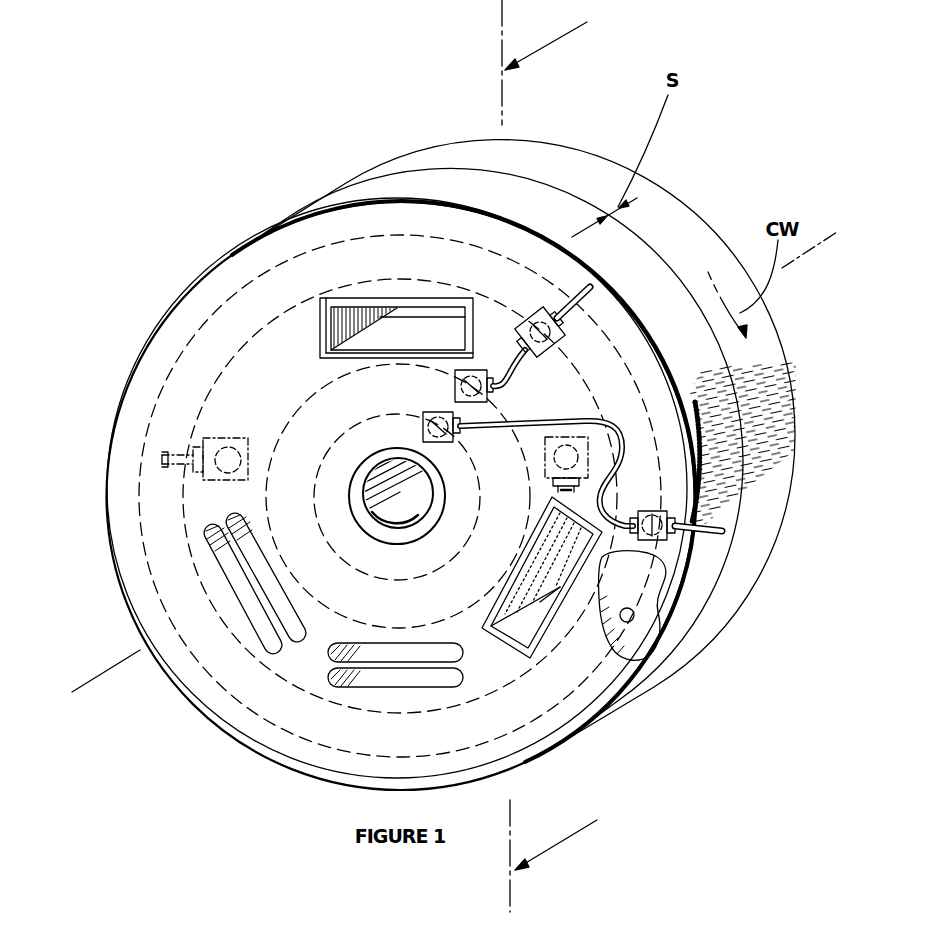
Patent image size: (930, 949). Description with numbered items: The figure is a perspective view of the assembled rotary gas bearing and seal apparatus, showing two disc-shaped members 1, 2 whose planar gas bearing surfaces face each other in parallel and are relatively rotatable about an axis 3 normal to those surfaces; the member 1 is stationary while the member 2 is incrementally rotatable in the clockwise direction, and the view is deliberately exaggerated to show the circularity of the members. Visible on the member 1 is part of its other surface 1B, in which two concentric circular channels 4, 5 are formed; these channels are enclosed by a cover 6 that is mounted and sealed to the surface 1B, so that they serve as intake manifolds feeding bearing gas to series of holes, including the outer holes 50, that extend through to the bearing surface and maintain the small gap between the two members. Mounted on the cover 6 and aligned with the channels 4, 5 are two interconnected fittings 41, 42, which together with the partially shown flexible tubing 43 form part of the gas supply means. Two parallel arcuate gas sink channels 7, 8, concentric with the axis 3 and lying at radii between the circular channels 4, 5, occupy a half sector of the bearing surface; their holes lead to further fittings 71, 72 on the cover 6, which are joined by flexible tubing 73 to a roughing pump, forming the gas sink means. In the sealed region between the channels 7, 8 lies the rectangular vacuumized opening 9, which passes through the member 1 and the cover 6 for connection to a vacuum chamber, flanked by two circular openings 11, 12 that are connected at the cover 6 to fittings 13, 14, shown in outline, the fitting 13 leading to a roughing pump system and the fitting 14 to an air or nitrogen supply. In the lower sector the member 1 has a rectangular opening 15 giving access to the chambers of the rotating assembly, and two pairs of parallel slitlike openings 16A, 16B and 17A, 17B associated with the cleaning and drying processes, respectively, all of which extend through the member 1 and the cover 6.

The member 1 is at (378, 193).
The surface of member 1 1B is at (609, 592).
The member 2 is at (452, 150).
The axis 3 is at (118, 668).
The circular channel 4 is at (377, 578).
The circular channel 5 is at (640, 583).
The cover 6 is at (190, 308).
The arcuate channel 7 is at (310, 397).
The arcuate channel 8 is at (275, 316).
The vacuumized opening 9 is at (342, 315).
The circular opening 11 is at (214, 474).
The circular opening 12 is at (563, 460).
The fitting 13 is at (208, 452).
The fitting 14 is at (560, 430).
The opening 15 is at (533, 578).
The slitlike opening 16A is at (417, 652).
The slitlike opening 16B is at (383, 678).
The slitlike opening 17A is at (287, 620).
The slitlike opening 17B is at (270, 633).
The fitting 41 is at (432, 414).
The fitting 42 is at (643, 512).
The flexible tubing 43 is at (720, 535).
The holes 50 is at (632, 620).
The fitting 71 is at (472, 370).
The fitting 72 is at (528, 312).
The flexible tubing 73 is at (570, 300).